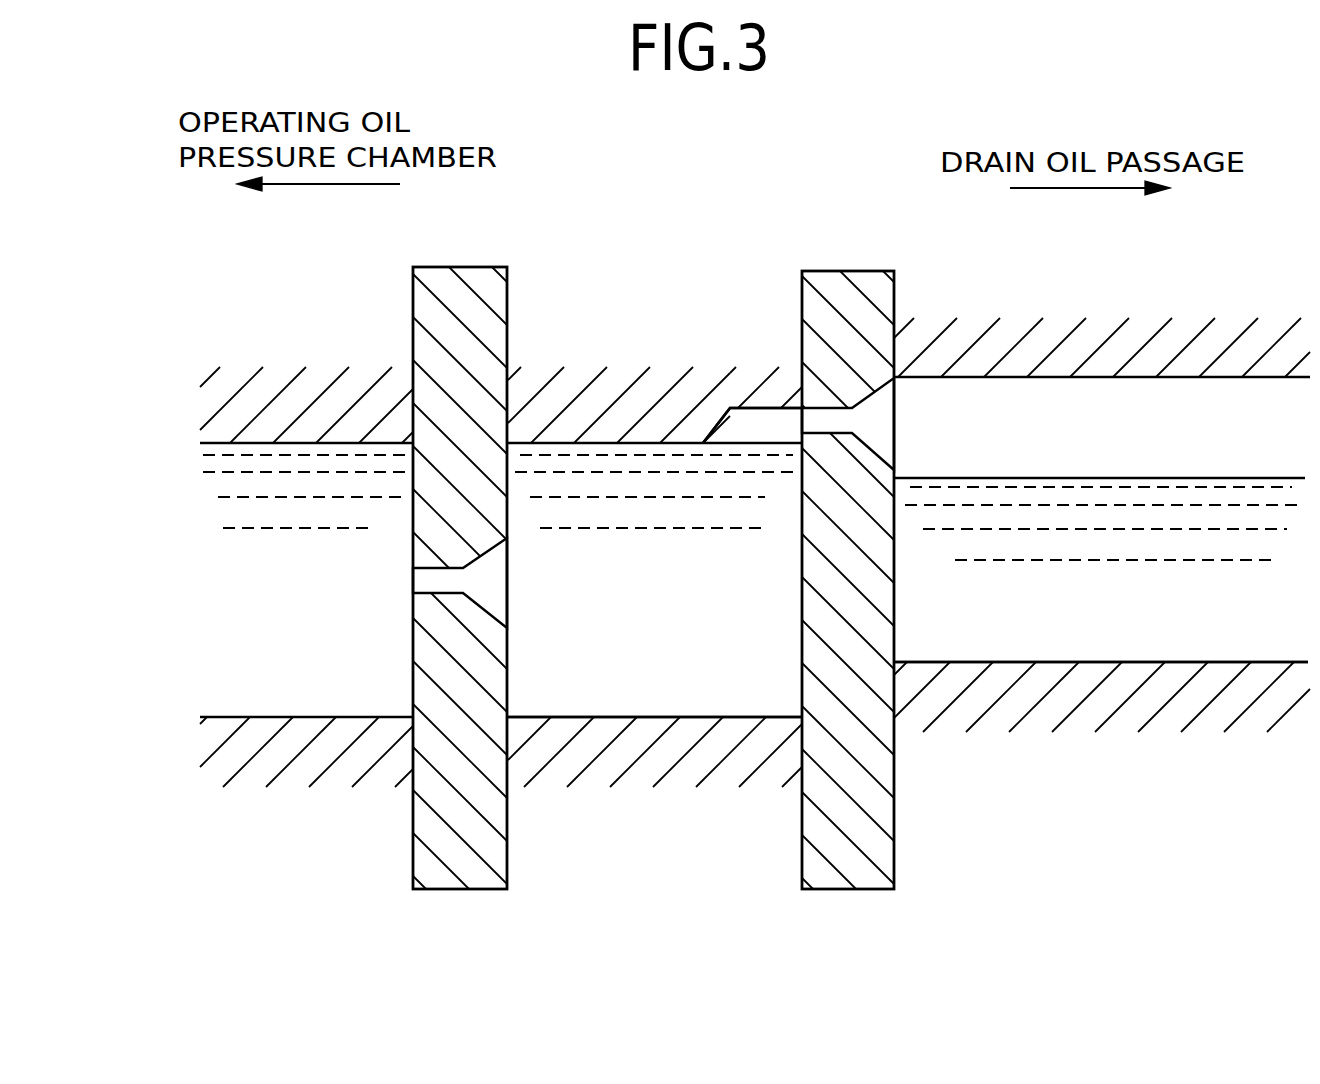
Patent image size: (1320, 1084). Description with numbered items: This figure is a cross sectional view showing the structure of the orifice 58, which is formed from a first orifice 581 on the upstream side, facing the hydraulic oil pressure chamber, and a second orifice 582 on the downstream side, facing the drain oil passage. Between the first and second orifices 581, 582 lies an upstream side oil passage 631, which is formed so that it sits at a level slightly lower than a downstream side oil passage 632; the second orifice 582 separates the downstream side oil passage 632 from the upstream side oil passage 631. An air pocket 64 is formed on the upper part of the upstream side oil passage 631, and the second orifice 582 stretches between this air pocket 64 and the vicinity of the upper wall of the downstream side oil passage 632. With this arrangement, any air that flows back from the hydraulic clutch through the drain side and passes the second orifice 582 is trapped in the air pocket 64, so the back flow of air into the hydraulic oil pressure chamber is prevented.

The orifice 58 is at (608, 338).
The first orifice 581 is at (433, 593).
The second orifice 582 is at (833, 433).
The air pocket 64 is at (763, 422).
The upstream side oil passage 631 is at (572, 719).
The downstream side oil passage 632 is at (1048, 663).